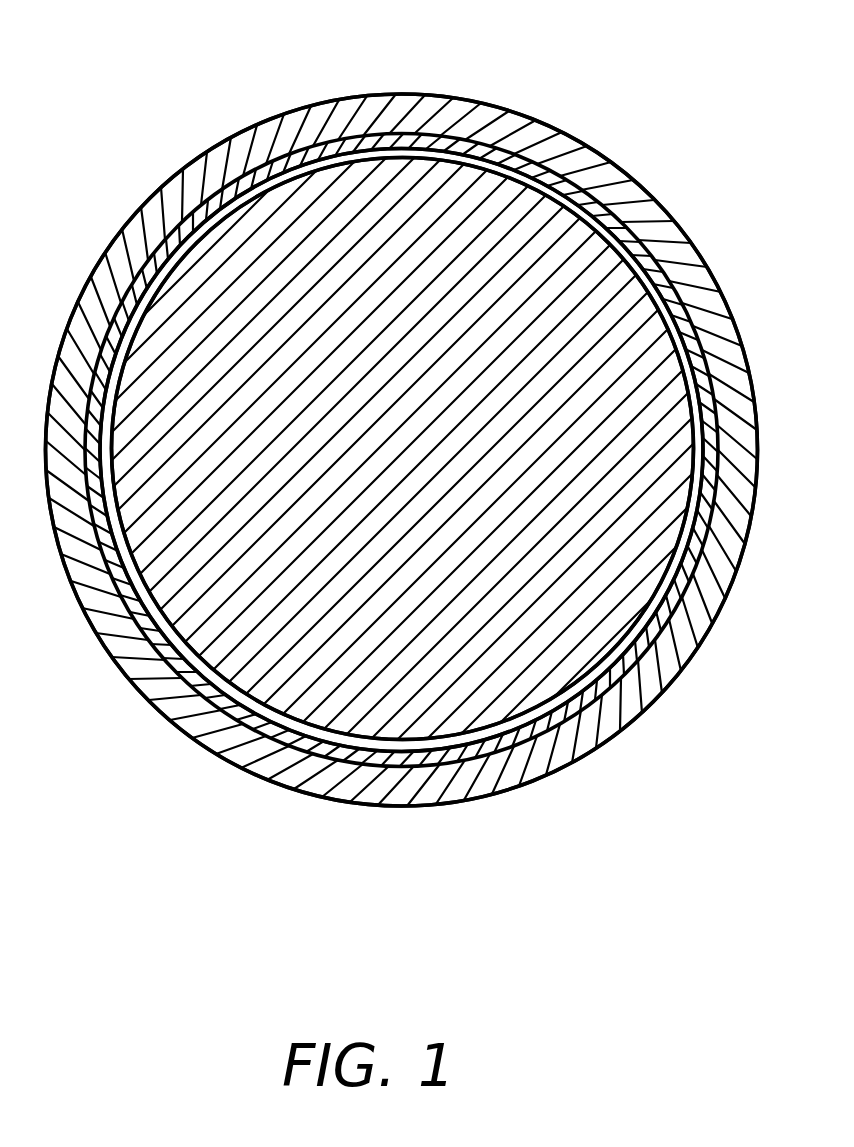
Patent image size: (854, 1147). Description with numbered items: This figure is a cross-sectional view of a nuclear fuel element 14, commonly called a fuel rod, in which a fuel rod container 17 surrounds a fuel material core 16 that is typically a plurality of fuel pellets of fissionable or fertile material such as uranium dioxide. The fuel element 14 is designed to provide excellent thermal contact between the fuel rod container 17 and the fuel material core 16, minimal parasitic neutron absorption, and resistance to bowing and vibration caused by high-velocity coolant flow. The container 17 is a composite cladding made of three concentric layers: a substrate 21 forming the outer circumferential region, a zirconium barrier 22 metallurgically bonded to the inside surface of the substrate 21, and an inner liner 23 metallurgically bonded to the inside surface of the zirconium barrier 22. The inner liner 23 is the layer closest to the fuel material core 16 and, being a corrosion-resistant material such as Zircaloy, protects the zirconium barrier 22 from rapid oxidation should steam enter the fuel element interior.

The fuel element 14 is at (658, 105).
The fuel material core 16 is at (647, 312).
The fuel rod container 17 is at (542, 782).
The substrate 21 is at (177, 187).
The zirconium barrier 22 is at (233, 712).
The inner liner 23 is at (480, 158).